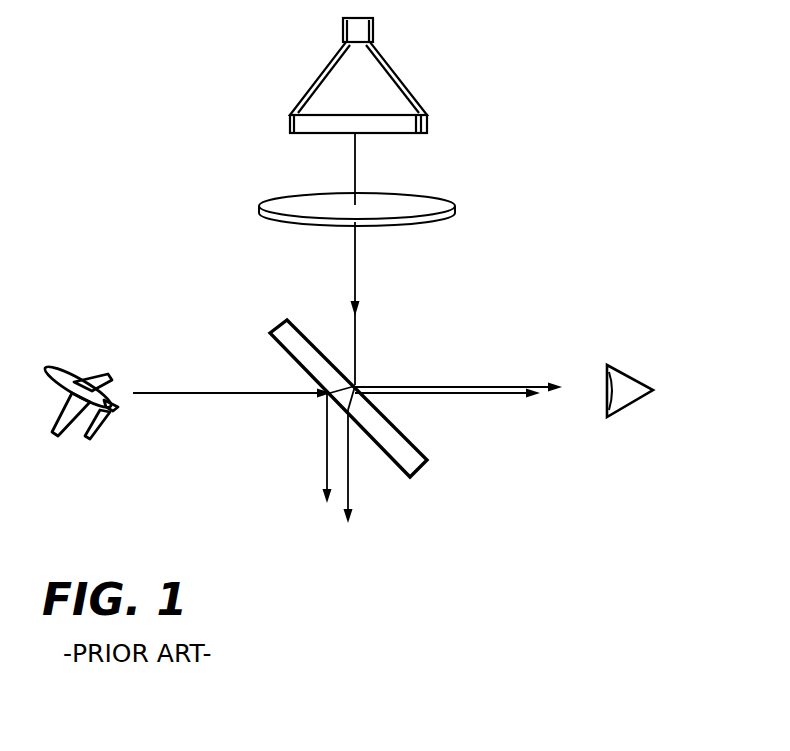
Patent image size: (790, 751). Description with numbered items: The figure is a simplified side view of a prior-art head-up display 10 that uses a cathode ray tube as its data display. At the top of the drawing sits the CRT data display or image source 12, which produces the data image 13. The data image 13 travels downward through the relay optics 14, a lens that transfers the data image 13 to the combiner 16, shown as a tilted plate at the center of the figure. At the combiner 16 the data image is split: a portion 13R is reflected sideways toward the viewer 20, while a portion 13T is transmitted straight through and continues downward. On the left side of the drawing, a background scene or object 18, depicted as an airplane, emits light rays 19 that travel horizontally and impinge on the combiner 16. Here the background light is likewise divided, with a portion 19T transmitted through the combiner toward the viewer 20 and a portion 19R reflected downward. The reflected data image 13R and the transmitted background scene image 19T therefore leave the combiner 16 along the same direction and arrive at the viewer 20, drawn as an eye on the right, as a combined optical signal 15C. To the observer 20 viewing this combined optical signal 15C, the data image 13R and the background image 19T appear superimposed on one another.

The head-up display 10 is at (596, 175).
The CRT data display or image source 12 is at (398, 77).
The data image 13 is at (358, 263).
The reflected portion of data image 13R is at (480, 396).
The transmitted portion of data image 13T is at (351, 494).
The relay optics 14 is at (267, 203).
The combined optical signal 15C is at (552, 360).
The combiner 16 is at (283, 326).
The background scene or object 18 is at (55, 366).
The light rays 19 is at (195, 391).
The reflected portion of light rays 19R is at (326, 462).
The transmitted portion of light rays 19T is at (495, 385).
The viewer 20 is at (632, 403).